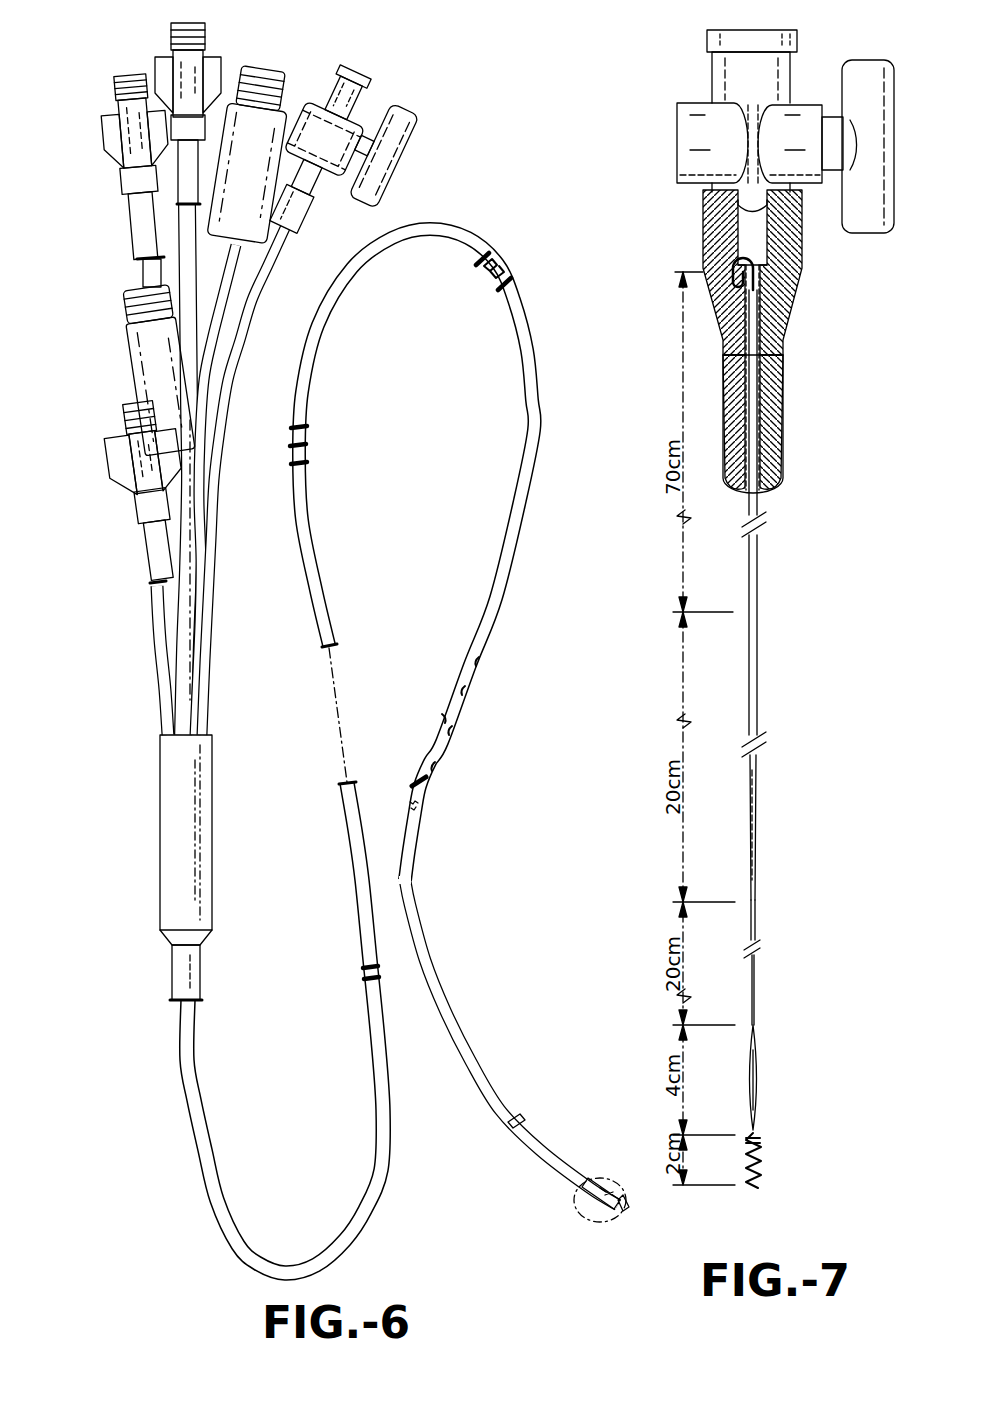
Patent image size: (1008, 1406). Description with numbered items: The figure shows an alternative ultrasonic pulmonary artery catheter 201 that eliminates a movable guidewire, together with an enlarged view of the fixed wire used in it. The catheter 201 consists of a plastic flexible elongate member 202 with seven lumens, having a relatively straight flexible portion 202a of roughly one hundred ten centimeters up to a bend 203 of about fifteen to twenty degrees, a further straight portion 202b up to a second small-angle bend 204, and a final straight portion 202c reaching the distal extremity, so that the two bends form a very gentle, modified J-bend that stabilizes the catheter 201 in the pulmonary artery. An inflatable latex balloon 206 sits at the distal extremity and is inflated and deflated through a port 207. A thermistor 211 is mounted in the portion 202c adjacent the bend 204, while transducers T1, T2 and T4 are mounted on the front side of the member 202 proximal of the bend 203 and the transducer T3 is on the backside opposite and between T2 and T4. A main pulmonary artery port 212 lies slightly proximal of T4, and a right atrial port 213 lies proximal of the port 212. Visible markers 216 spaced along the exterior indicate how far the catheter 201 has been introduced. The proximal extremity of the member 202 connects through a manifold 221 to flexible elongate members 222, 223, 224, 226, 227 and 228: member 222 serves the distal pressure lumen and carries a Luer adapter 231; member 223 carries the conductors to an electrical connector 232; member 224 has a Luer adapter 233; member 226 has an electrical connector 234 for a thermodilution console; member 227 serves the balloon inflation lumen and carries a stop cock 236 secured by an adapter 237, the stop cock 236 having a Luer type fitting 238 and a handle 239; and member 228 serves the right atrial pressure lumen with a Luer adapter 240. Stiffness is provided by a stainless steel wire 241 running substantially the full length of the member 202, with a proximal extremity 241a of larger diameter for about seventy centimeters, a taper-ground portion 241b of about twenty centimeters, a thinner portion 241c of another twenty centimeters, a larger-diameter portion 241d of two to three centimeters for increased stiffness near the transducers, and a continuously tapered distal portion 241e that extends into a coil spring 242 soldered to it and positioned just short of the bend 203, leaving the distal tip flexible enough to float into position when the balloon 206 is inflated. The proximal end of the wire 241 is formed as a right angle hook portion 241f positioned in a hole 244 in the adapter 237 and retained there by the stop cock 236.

In FIG. 6, the catheter 201 is at (150, 736).
In FIG. 6, the flexible elongate member 202 is at (358, 1192).
In FIG. 6, the relatively straight flexible portion 202a is at (315, 556).
In FIG. 6, the flexible relatively straight portion 202b is at (453, 988).
In FIG. 6, the flexible relatively straight portion 202c is at (570, 1165).
In FIG. 6, the bend 203 is at (414, 840).
In FIG. 6, the bend 204 is at (493, 1085).
In FIG. 6, the inflatable latex balloon 206 is at (628, 1180).
In FIG. 6, the port 207 is at (592, 1228).
In FIG. 6, the thermistor 211 is at (522, 1122).
In FIG. 6, the main pulmonary artery port 212 is at (486, 658).
In FIG. 6, the right atrial port 213 is at (488, 262).
In FIG. 6, the markers 216 is at (312, 442).
In FIG. 6, the manifold 221 is at (165, 858).
In FIG. 6, the flexible elongate member 222 is at (148, 275).
In FIG. 6, the flexible elongate member 223 is at (222, 322).
In FIG. 6, the flexible elongate member 224 is at (186, 240).
In FIG. 6, the flexible elongate member 226 is at (197, 568).
In FIG. 6, the flexible elongate member 227 is at (212, 540).
In FIG. 7, the flexible elongate member 227 is at (786, 420).
In FIG. 6, the flexible elongate member 228 is at (167, 652).
In FIG. 6, the Luer adapter 231 is at (133, 157).
In FIG. 6, the electrical connector 232 is at (252, 68).
In FIG. 6, the Luer adapter 233 is at (165, 60).
In FIG. 6, the electrical connector 234 is at (142, 350).
In FIG. 6, the stop cock 236 is at (341, 55).
In FIG. 7, the stop cock 236 is at (754, 141).
In FIG. 6, the adapter 237 is at (300, 222).
In FIG. 7, the adapter 237 is at (790, 302).
In FIG. 6, the Luer type fitting 238 is at (372, 78).
In FIG. 7, the Luer type fitting 238 is at (707, 40).
In FIG. 6, the handle 239 is at (405, 135).
In FIG. 7, the handle 239 is at (888, 232).
In FIG. 6, the Luer adapter 240 is at (133, 470).
In FIG. 7, the flexible elongate element 241 is at (760, 505).
In FIG. 7, the proximal extremity 241a is at (755, 448).
In FIG. 7, the portion 241b is at (755, 677).
In FIG. 7, the portion 241c is at (753, 972).
In FIG. 7, the portion 241d is at (756, 1078).
In FIG. 7, the portion 241e is at (756, 1167).
In FIG. 7, the right angle hook portion 241f is at (710, 215).
In FIG. 6, the coil spring 242 is at (425, 803).
In FIG. 7, the coil spring 242 is at (758, 1140).
In FIG. 7, the hole 244 is at (728, 272).
In FIG. 6, the transducer T1 is at (440, 765).
In FIG. 6, the transducer T2 is at (457, 728).
In FIG. 6, the transducer T3 is at (443, 714).
In FIG. 6, the transducer T4 is at (472, 690).